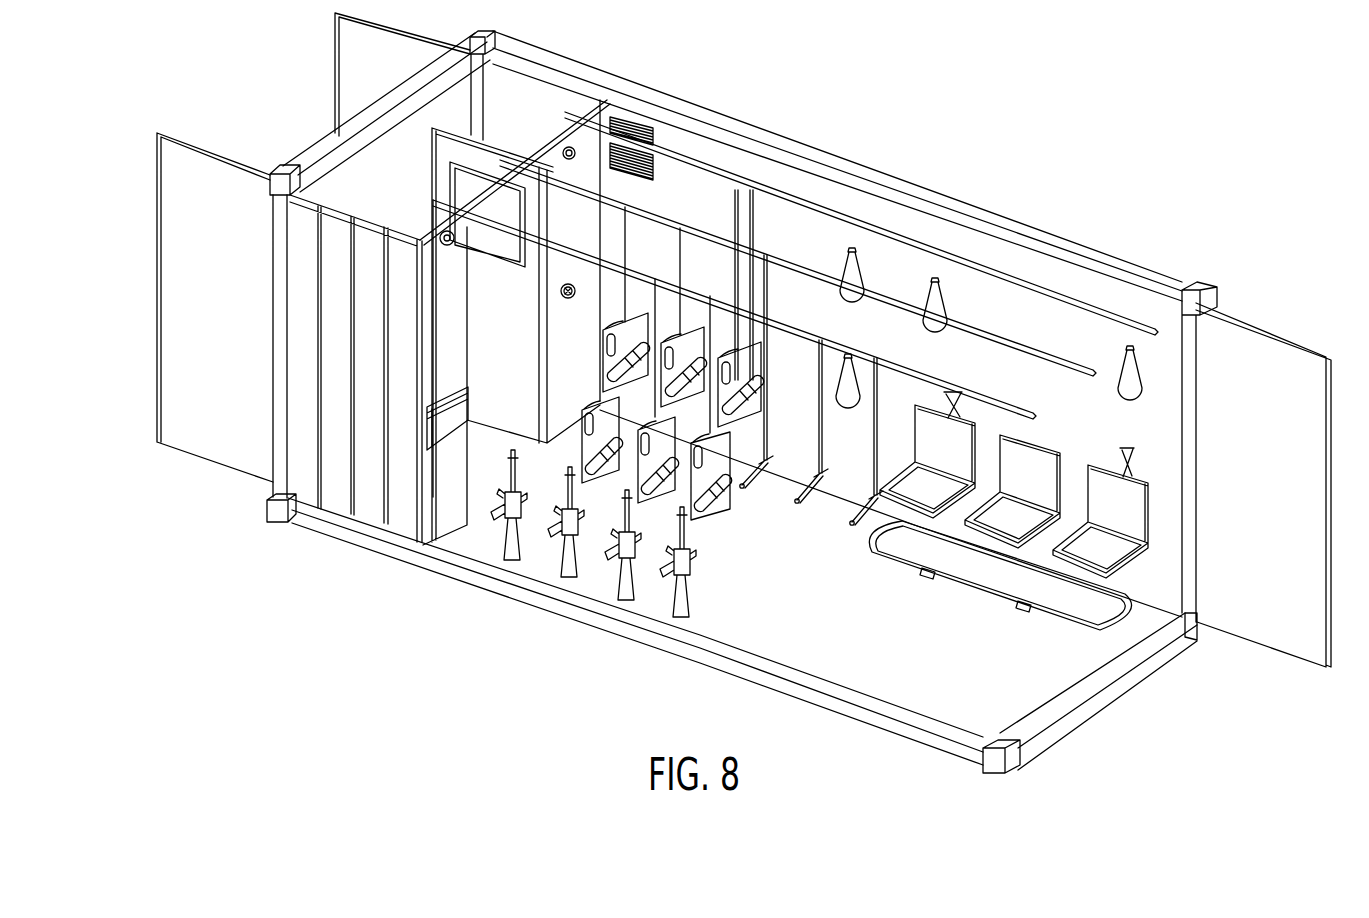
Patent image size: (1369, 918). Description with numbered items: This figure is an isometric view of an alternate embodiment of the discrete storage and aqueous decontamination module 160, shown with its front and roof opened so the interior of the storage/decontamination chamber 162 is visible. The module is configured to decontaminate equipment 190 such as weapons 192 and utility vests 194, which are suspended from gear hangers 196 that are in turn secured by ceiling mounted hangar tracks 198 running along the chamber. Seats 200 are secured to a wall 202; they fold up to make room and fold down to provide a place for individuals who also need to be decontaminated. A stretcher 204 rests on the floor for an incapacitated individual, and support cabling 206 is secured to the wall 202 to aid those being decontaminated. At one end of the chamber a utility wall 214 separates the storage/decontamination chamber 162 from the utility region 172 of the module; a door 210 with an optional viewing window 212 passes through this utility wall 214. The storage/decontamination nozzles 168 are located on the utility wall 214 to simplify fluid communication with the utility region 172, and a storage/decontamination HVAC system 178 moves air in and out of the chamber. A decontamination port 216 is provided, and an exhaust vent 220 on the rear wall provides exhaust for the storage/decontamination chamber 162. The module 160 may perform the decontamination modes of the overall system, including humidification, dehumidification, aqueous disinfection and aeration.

The storage and aqueous decontamination module 160 is at (873, 163).
The storage/decontamination chamber 162 is at (1020, 312).
The storage/decontamination nozzles 168 is at (442, 232).
The utility region 172 is at (417, 137).
The storage/decontamination HVAC system 178 is at (462, 425).
The equipment 190 is at (657, 412).
The weapons 192 is at (690, 592).
The utility vests 194 is at (713, 510).
The gear hangers 196 is at (768, 460).
The hangar tracks 198 is at (830, 233).
The seats 200 is at (1150, 510).
The wall 202 is at (1097, 427).
The stretcher 204 is at (1003, 583).
The support cabling 206 is at (1140, 385).
The door 210 is at (521, 360).
The viewing window 212 is at (498, 245).
The utility wall 214 is at (484, 193).
The decontamination port 216 is at (571, 302).
The exhaust vent 220 is at (637, 130).